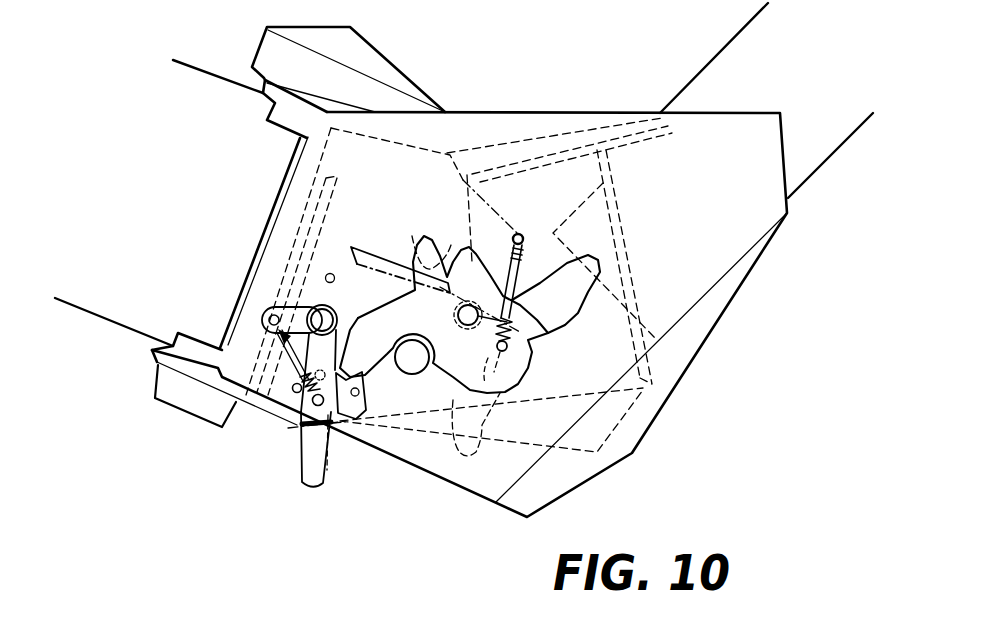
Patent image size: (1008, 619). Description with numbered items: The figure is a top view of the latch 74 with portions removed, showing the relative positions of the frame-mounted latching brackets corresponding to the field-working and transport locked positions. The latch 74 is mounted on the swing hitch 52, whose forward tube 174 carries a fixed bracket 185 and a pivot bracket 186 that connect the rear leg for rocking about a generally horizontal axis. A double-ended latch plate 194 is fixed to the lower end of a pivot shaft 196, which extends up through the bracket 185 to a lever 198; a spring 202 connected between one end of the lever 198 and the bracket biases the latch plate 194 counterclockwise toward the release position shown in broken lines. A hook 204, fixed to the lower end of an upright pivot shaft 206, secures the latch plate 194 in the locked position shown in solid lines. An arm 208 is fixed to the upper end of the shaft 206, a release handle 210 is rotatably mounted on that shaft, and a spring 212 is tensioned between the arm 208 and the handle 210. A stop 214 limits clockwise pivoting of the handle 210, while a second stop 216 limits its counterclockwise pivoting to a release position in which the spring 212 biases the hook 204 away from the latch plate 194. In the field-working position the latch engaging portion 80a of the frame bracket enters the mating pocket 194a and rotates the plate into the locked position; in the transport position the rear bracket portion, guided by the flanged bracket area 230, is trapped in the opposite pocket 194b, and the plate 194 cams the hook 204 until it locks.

The flanged bracket area 230 is at (377, 50).
The forward tube 174 is at (730, 46).
The latch plate 194 is at (498, 168).
The spring 202 is at (524, 240).
The lever 198 is at (371, 252).
The latch plate pocket 194b is at (462, 234).
The second stop 216 is at (327, 273).
The upright pivot shaft 206 is at (319, 300).
The arm 208 is at (310, 308).
The swing hitch 52 is at (787, 213).
The pivot shaft 196 is at (528, 325).
The fixed bracket 185 is at (699, 349).
The pivot bracket 186 is at (158, 372).
The mating pocket 194a is at (487, 396).
The spring 212 is at (294, 392).
The stop 214 is at (312, 404).
The release handle 210 is at (305, 485).
The hook 204 is at (348, 412).
The latch engaging portion 80a is at (412, 360).
The latch 74 is at (738, 446).